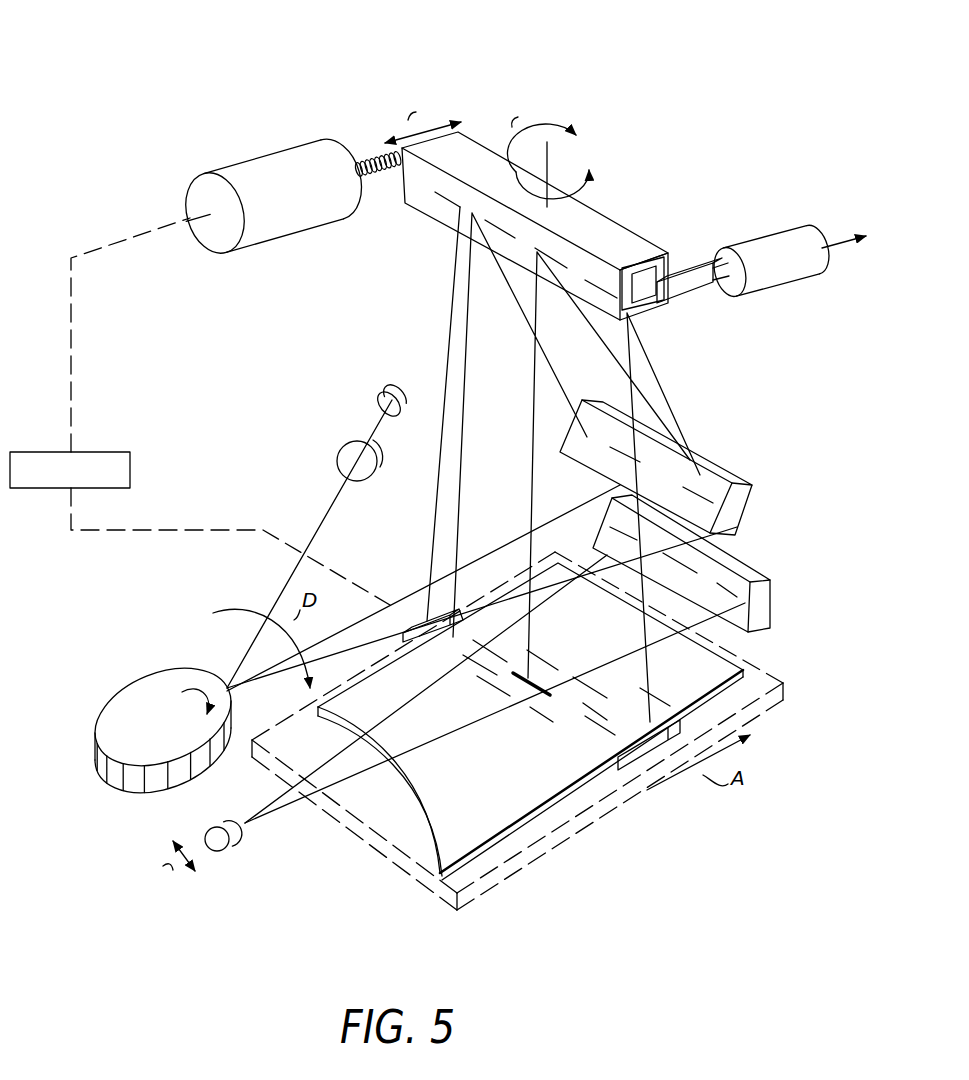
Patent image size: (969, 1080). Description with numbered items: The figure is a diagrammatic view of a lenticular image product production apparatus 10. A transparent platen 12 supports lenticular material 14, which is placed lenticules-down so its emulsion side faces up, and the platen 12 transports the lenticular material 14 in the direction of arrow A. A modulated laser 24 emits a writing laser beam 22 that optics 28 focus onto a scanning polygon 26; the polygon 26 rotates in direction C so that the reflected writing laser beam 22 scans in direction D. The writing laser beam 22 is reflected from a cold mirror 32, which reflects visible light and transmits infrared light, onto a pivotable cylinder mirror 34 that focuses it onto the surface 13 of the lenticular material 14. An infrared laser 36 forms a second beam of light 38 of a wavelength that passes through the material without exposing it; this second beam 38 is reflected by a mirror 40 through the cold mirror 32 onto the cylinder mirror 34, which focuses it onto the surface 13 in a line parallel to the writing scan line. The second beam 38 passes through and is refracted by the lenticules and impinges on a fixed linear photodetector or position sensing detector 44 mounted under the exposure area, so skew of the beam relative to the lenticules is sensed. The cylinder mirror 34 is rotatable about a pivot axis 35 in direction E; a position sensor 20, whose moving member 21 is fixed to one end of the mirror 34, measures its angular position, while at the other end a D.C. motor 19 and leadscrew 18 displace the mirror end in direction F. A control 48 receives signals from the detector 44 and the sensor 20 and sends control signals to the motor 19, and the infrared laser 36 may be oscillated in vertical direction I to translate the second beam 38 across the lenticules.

The lenticular image product production apparatus 10 is at (185, 62).
The platen 12 is at (495, 882).
The surface 13 is at (713, 672).
The lenticular material 14 is at (493, 802).
The leadscrew 18 is at (376, 156).
The D.C. motor 19 is at (268, 172).
The position sensor 20 is at (776, 277).
The moving member 21 is at (690, 295).
The writing laser beam 22 is at (270, 594).
The modulated laser 24 is at (378, 386).
The scanning polygon 26 is at (122, 700).
The optics 28 is at (338, 450).
The cold mirror 32 is at (716, 487).
The pivotable cylinder mirror 34 is at (601, 222).
The pivot axis 35 is at (554, 158).
The infrared laser 36 is at (227, 853).
The second beam of light 38 is at (485, 689).
The mirror 40 is at (745, 568).
The linear photodetector or position sensing detector 44 is at (553, 720).
The control 48 is at (100, 452).